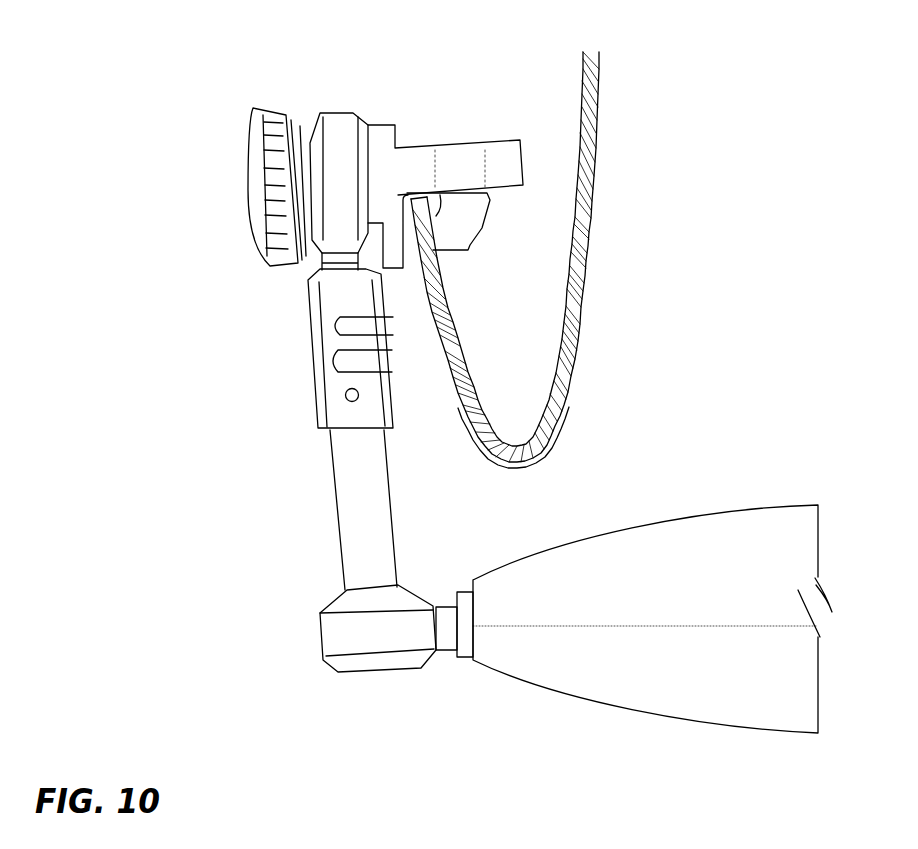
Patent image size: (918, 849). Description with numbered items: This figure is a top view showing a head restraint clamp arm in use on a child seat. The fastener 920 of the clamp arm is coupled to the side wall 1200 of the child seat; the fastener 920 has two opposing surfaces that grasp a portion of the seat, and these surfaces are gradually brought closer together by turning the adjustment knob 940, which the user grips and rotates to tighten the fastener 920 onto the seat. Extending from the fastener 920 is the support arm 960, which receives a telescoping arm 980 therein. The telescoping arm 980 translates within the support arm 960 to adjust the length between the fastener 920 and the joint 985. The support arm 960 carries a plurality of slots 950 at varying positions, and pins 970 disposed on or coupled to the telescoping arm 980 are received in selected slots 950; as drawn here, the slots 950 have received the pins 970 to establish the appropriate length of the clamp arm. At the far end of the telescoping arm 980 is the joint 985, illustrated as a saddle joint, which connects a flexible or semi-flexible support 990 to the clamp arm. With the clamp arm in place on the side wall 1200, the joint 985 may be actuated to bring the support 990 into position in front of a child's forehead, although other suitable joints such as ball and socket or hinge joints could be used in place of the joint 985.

The fastener 920 is at (457, 153).
The adjustment knob 940 is at (270, 217).
The slots 950 is at (345, 332).
The support arm 960 is at (339, 348).
The pins 970 is at (358, 395).
The telescoping arm 980 is at (352, 511).
The joint 985 is at (368, 640).
The support 990 is at (607, 702).
The side wall 1200 is at (430, 297).